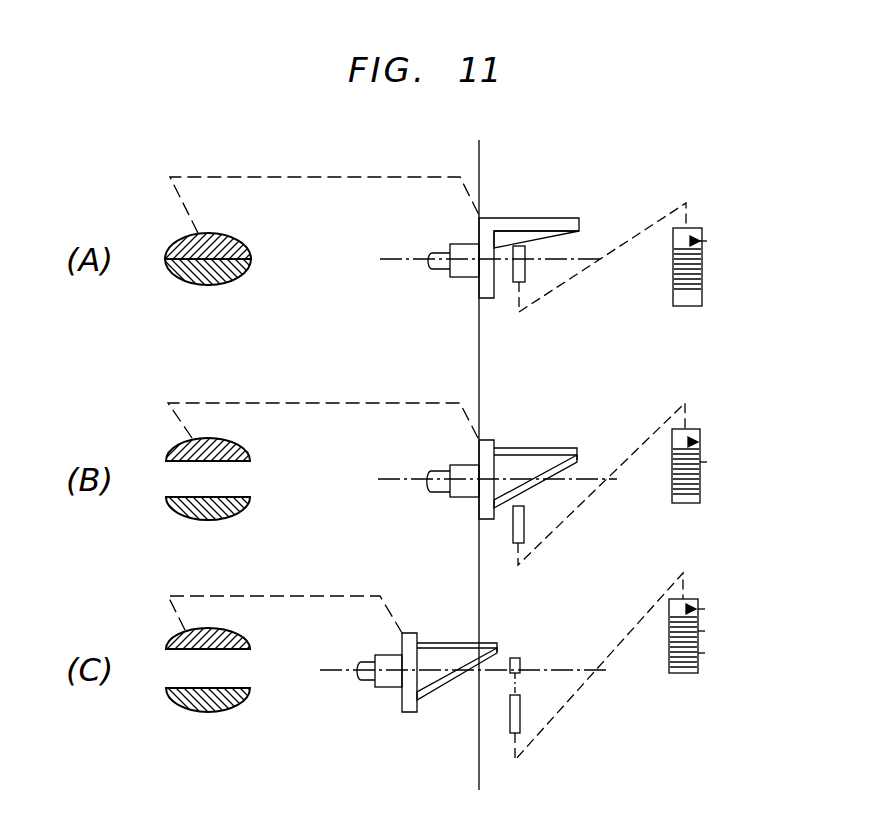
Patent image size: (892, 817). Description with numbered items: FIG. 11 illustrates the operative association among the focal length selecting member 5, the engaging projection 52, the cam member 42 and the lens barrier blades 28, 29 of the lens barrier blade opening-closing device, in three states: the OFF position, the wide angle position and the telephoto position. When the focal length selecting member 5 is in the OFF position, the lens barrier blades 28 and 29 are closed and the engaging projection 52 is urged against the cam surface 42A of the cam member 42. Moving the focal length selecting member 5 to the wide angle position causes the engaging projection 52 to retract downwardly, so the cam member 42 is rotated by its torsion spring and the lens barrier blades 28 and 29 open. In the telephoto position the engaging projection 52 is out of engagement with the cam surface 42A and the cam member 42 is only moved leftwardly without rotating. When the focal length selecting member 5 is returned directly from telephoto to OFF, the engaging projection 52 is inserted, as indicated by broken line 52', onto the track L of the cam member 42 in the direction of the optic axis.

The track L is at (383, 259).
The lens barrier blade 28 is at (250, 238).
The lens barrier blade 29 is at (250, 270).
The cam member 42 is at (511, 218).
The cam surface 42A is at (540, 240).
The engaging projection 52 is at (585, 492).
The engaging projection (broken line position) 52' is at (524, 656).
The focal length selecting member 5 is at (702, 292).